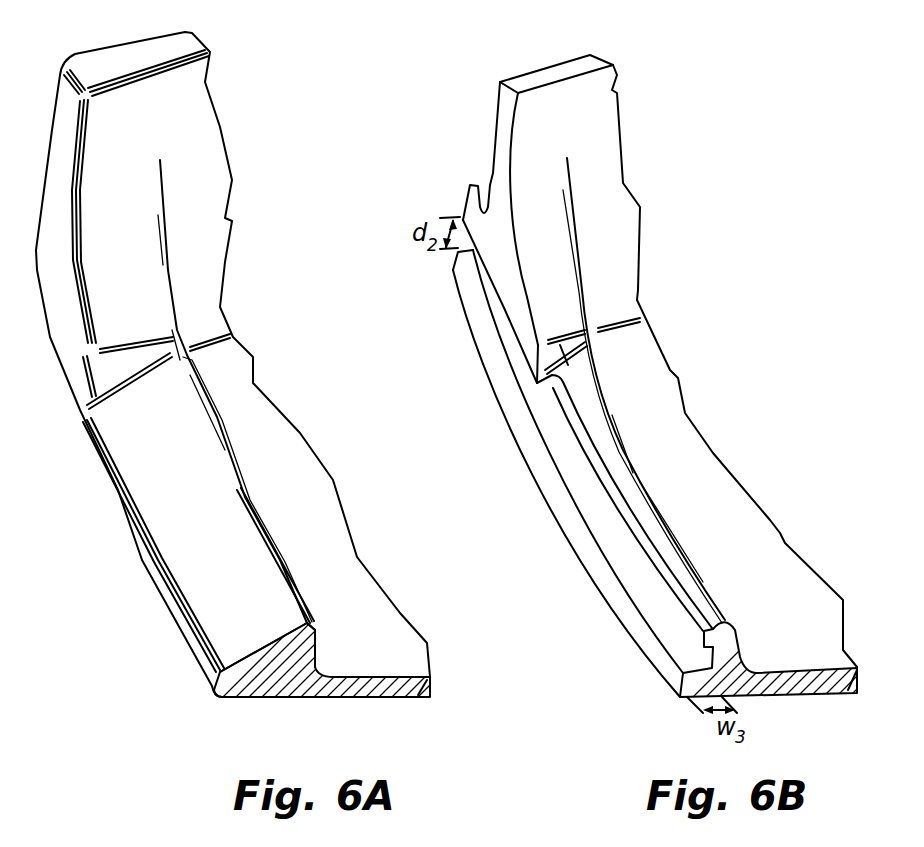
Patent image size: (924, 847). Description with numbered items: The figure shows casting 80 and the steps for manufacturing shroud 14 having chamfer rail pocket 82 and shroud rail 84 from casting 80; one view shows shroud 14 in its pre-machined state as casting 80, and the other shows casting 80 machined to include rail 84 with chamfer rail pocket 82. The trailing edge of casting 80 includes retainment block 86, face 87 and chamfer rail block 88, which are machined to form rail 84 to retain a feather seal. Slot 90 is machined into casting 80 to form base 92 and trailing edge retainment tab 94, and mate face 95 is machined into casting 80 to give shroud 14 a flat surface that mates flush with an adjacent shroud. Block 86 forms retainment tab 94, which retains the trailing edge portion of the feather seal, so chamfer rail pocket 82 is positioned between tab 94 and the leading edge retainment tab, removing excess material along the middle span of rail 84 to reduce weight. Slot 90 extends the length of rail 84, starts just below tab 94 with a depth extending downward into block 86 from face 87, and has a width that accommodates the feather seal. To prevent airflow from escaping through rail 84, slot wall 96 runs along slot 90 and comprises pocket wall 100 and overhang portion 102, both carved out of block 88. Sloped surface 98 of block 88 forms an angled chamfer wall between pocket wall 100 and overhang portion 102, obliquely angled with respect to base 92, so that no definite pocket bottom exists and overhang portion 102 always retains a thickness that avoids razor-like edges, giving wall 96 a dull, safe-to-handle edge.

In FIG. 6A, the shroud 14 is at (397, 657).
In FIG. 6B, the shroud 14 is at (823, 667).
In FIG. 6A, the casting 80 is at (243, 85).
In FIG. 6A, the chamfer rail pocket 82 is at (183, 502).
In FIG. 6B, the chamfer rail pocket 82 is at (566, 448).
In FIG. 6B, the shroud rail 84 is at (675, 654).
In FIG. 6A, the retainment block 86 is at (113, 300).
In FIG. 6A, the face 87 is at (140, 360).
In FIG. 6B, the face 87 is at (560, 330).
In FIG. 6A, the chamfer rail block 88 is at (232, 618).
In FIG. 6B, the slot 90 is at (513, 382).
In FIG. 6B, the base 92 is at (593, 508).
In FIG. 6B, the trailing edge retainment tab 94 is at (540, 305).
In FIG. 6B, the mate face 95 is at (502, 242).
In FIG. 6B, the slot wall 96 is at (750, 585).
In FIG. 6A, the sloped surface 98 is at (262, 590).
In FIG. 6B, the sloped surface 98 is at (660, 533).
In FIG. 6B, the pocket wall 100 is at (733, 653).
In FIG. 6B, the overhang portion 102 is at (720, 637).